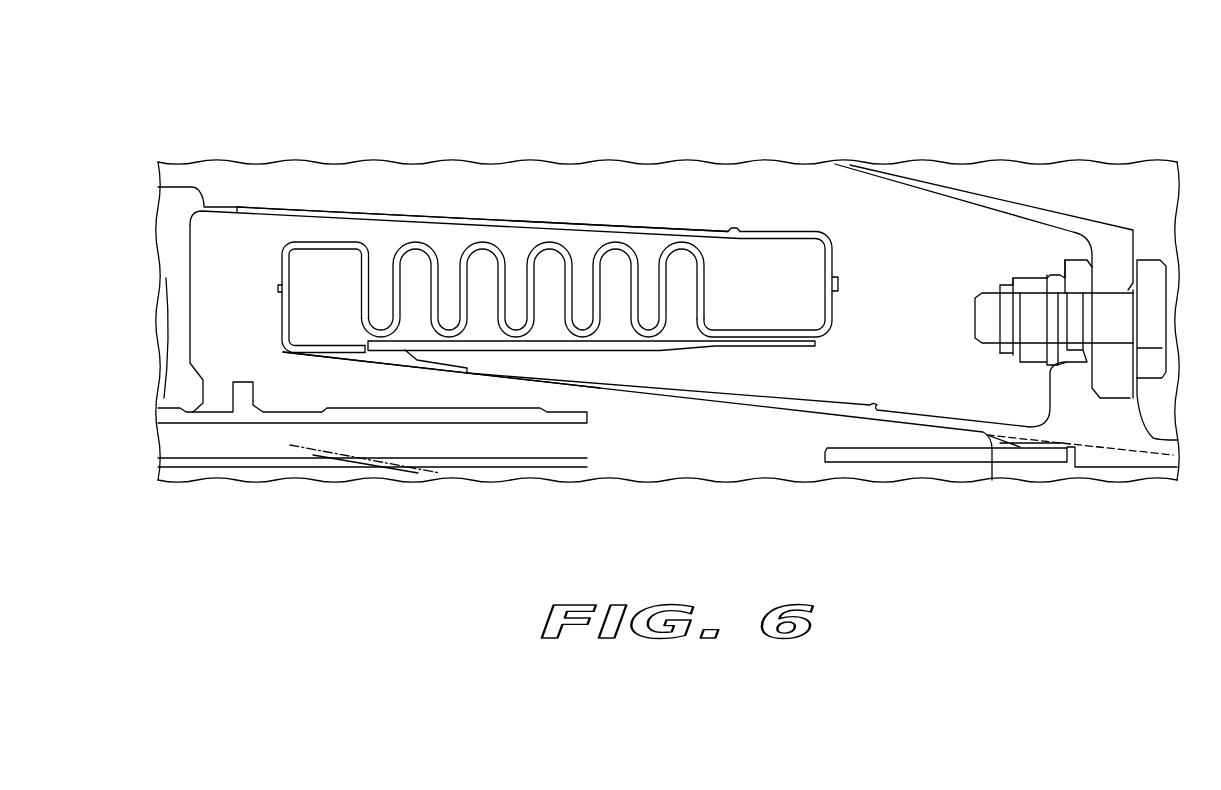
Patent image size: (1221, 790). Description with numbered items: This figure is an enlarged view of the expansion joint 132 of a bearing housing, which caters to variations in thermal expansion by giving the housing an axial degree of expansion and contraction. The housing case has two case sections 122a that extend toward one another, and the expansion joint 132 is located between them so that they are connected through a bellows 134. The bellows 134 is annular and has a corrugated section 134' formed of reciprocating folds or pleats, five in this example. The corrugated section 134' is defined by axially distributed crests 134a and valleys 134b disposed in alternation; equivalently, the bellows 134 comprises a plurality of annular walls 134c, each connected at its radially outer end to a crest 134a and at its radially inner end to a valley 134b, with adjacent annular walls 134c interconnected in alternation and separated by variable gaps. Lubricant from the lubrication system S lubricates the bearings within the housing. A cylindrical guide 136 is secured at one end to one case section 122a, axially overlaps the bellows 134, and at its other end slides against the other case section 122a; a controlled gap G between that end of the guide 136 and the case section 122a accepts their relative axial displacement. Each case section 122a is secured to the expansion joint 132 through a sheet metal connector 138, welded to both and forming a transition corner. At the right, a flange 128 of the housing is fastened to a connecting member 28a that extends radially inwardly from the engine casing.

The case section 122a is at (229, 212).
The expansion joint 132 is at (360, 230).
The bellows 134 is at (533, 213).
The corrugated section 134' is at (563, 102).
The crest 134a is at (550, 242).
The valley 134b is at (582, 340).
The annular wall 134c is at (704, 290).
The lubrication system S is at (622, 278).
The gap G is at (351, 345).
The guide 136 is at (767, 346).
The connector 138 is at (778, 232).
The connecting member 28a is at (993, 190).
The flange 128 is at (1062, 270).